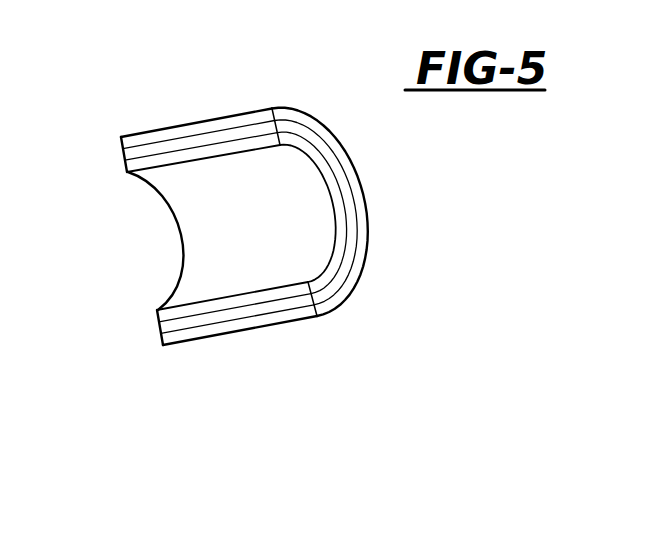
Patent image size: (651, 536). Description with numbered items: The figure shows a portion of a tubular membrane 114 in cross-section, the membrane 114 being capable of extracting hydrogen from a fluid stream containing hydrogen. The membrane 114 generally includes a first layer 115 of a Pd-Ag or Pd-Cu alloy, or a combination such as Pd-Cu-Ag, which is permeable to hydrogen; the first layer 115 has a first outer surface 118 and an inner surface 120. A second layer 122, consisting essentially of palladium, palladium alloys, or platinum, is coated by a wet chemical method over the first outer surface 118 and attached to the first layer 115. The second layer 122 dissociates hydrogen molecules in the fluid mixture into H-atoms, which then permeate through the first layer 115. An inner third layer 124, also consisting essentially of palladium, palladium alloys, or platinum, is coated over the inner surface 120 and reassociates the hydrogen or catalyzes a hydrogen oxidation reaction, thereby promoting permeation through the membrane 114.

The membrane 114 is at (245, 269).
The first layer 115 is at (275, 310).
The first outer surface 118 is at (350, 242).
The inner surface 120 is at (156, 154).
The second layer 122 is at (178, 343).
The inner third layer 124 is at (171, 303).